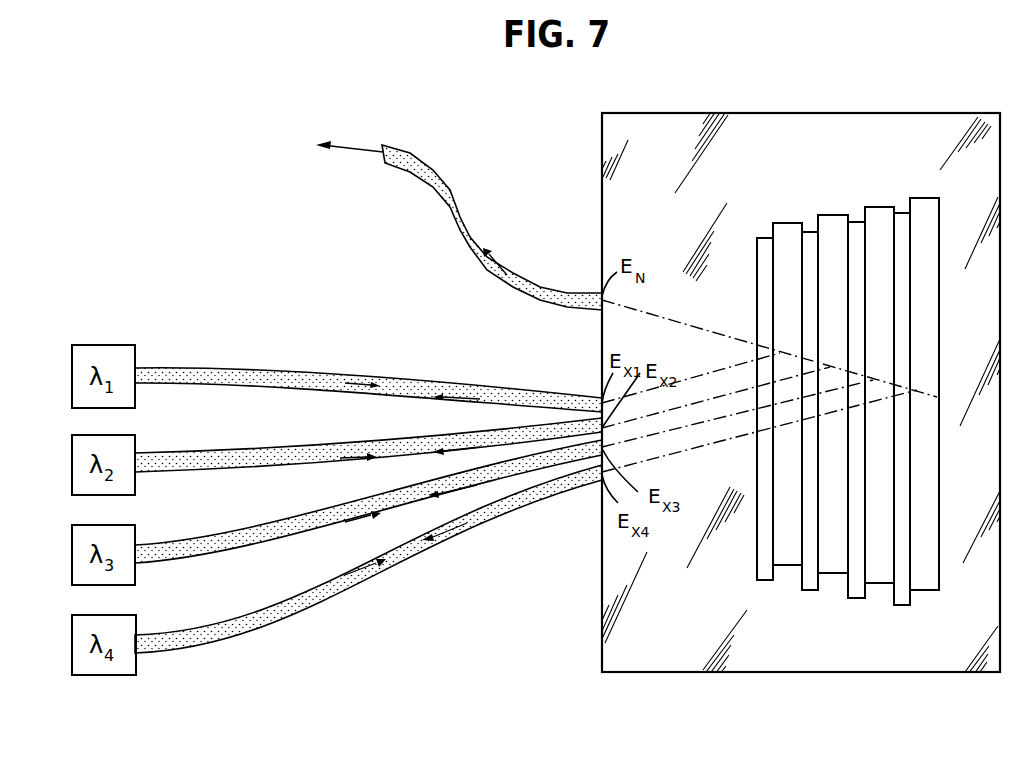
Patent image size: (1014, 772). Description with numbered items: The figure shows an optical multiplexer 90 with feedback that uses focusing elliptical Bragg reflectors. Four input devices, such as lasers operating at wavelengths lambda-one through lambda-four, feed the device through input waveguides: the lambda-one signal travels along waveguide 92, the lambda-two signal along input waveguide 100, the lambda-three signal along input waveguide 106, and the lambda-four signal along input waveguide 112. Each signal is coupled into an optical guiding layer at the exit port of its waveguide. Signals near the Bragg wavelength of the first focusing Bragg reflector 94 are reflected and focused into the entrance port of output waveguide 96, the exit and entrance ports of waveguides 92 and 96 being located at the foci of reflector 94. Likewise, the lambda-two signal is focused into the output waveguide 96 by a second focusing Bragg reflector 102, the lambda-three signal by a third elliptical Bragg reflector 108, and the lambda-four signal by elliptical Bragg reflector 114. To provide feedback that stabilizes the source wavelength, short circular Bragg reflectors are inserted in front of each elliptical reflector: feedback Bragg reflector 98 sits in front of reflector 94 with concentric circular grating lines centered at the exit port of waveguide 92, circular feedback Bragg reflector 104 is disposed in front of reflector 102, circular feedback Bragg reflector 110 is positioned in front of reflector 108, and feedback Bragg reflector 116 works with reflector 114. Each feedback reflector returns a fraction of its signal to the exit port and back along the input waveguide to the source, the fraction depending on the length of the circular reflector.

The optical multiplexer 90 is at (565, 76).
The waveguide 92 is at (265, 367).
The input waveguide 100 is at (255, 452).
The input waveguide 106 is at (251, 531).
The input waveguide 112 is at (270, 625).
The output waveguide 96 is at (457, 187).
The feedback Bragg reflector 98 is at (763, 250).
The circular feedback Bragg reflector 104 is at (808, 242).
The circular feedback Bragg reflector 110 is at (853, 235).
The feedback Bragg reflector 116 is at (898, 223).
The first focusing Bragg reflector 94 is at (785, 560).
The second focusing Bragg reflector 102 is at (833, 560).
The third elliptical Bragg reflector 108 is at (877, 572).
The elliptical Bragg reflector 114 is at (930, 577).